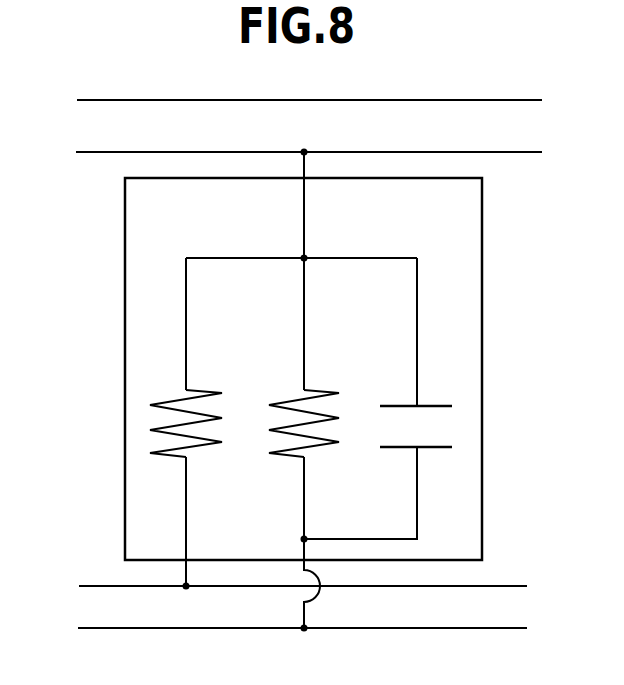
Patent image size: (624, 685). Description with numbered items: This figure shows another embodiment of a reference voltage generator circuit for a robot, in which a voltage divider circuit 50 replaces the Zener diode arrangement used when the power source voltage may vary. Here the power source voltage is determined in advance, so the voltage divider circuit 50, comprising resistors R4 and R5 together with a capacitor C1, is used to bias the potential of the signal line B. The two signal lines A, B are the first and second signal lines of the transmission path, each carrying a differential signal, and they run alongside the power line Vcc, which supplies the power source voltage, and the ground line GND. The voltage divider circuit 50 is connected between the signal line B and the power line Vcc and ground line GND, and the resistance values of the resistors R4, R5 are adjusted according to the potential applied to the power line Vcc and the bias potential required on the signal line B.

The voltage divider circuit 50 is at (483, 233).
The resistor R4 is at (150, 418).
The resistor R5 is at (321, 370).
The capacitor C1 is at (440, 385).
The first signal line A is at (300, 101).
The second signal line B is at (300, 150).
The power line Vcc is at (282, 587).
The ground line GND is at (277, 628).